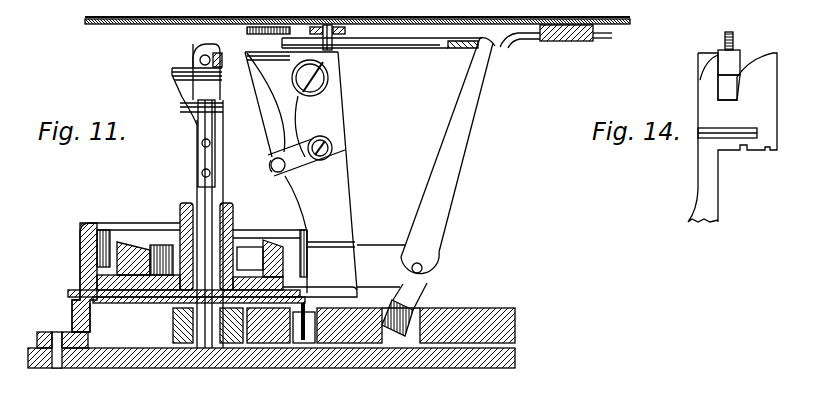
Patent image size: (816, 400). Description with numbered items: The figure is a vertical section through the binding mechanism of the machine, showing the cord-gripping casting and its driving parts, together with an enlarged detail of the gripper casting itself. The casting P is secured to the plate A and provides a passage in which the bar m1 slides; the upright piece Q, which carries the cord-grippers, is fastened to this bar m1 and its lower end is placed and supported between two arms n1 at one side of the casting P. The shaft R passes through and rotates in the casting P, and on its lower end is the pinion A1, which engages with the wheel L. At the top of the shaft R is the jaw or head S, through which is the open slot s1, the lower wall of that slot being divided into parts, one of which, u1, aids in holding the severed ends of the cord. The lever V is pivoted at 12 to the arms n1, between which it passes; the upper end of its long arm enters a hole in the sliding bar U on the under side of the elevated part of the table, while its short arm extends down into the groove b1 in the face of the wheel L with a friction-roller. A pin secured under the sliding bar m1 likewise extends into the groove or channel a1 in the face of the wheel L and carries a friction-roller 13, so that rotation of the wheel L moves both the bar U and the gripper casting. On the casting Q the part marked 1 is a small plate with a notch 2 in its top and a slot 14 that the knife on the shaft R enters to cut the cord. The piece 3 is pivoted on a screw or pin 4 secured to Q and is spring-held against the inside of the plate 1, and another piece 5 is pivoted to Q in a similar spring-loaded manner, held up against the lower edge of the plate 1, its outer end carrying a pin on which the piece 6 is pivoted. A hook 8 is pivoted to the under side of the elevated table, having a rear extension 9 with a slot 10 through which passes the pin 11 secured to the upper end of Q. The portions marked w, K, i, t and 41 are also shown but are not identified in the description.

In FIG. 11, the rail w is at (357, 13).
In FIG. 11, the hook 8 is at (308, 16).
In FIG. 11, the slot 10 is at (332, 16).
In FIG. 11, the extension 9 is at (352, 18).
In FIG. 11, the hook bracket K is at (554, 25).
In FIG. 11, the sliding bar U is at (382, 54).
In FIG. 11, the lever V is at (444, 174).
In FIG. 11, the pivot 12 is at (445, 256).
In FIG. 11, the groove b1 is at (432, 300).
In FIG. 11, the wheel L is at (466, 312).
In FIG. 11, the plate A is at (271, 367).
In FIG. 11, the pinion A1 is at (170, 378).
In FIG. 11, the casting P is at (125, 222).
In FIG. 11, the wedge i is at (116, 247).
In FIG. 11, the wedge t is at (260, 258).
In FIG. 11, the bar m1 is at (190, 289).
In FIG. 11, the groove or channel a1 is at (330, 300).
In FIG. 11, the arms n1 is at (381, 266).
In FIG. 11, the friction-roller 13 is at (244, 323).
In FIG. 11, the shaft R is at (210, 224).
In FIG. 11, the open slot s1 is at (215, 55).
In FIG. 11, the jaw or head S is at (184, 62).
In FIG. 11, the wing 41 is at (197, 90).
In FIG. 11, the lower wall part u1 is at (225, 59).
In FIG. 11, the upright piece Q is at (301, 172).
In FIG. 14, the upright piece Q is at (698, 137).
In FIG. 11, the plate 1 is at (264, 87).
In FIG. 14, the plate 1 is at (737, 137).
In FIG. 11, the piece 6 is at (277, 177).
In FIG. 11, the piece 3 is at (313, 82).
In FIG. 11, the screw or pin 4 is at (313, 77).
In FIG. 11, the piece 5 is at (322, 140).
In FIG. 14, the pin 11 is at (741, 51).
In FIG. 14, the notch 2 is at (729, 87).
In FIG. 14, the slot 14 is at (727, 126).